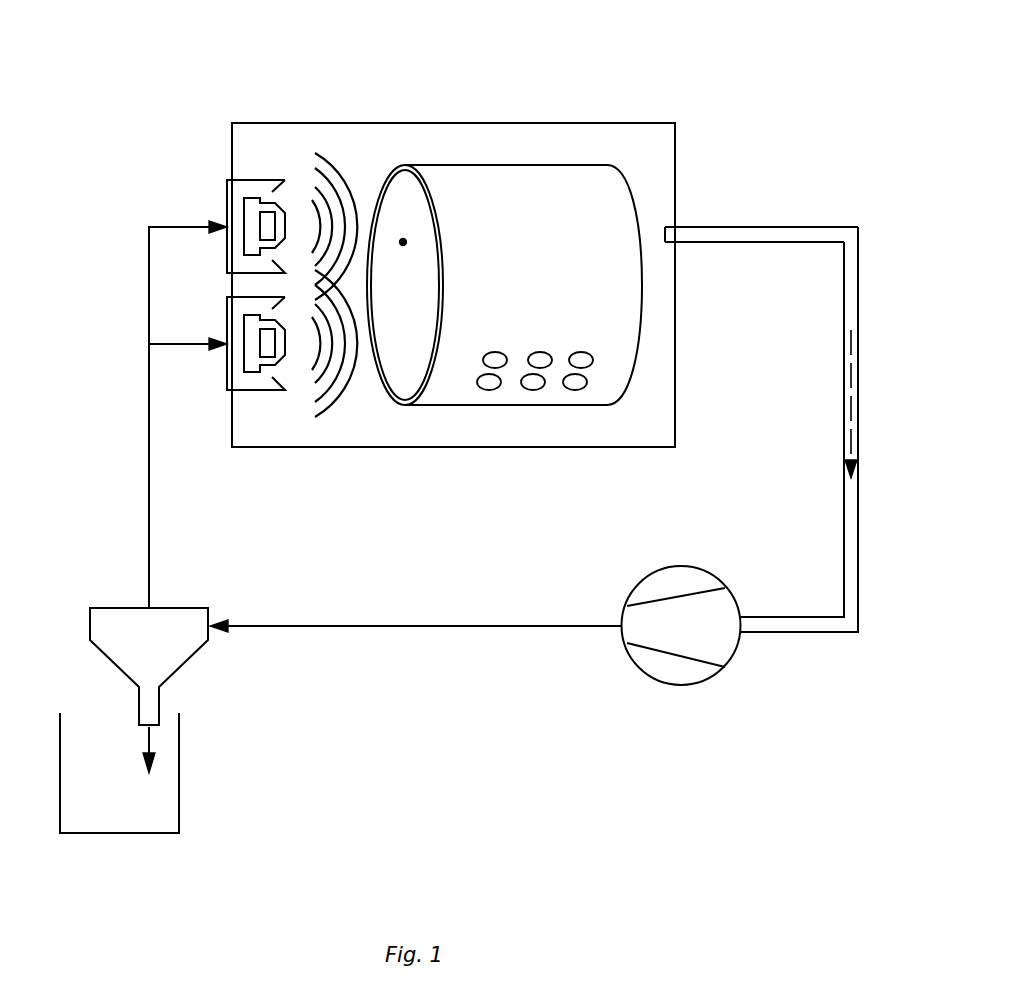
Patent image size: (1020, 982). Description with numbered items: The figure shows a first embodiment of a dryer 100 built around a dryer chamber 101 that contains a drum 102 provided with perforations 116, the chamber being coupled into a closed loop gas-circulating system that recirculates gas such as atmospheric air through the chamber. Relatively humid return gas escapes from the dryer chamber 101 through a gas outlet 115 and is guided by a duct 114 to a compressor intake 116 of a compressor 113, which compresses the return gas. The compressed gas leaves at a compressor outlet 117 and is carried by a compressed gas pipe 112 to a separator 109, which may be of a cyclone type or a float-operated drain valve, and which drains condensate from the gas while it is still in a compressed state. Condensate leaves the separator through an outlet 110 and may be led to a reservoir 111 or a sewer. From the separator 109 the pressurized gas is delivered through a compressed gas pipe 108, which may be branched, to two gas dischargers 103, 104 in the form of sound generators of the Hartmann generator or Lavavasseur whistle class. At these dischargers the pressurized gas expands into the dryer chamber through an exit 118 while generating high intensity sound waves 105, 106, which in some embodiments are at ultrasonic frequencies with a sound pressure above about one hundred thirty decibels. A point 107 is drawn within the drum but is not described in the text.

The dryer 100 is at (744, 60).
The dryer chamber 101 is at (460, 123).
The drum 102 is at (548, 295).
The gas discharger 103 is at (251, 178).
The gas discharger 104 is at (247, 391).
The high intensity sound waves 105 is at (340, 182).
The high intensity sound waves 106 is at (347, 392).
The drum rotation axis 107 is at (403, 242).
The compressed gas pipe 108 is at (151, 448).
The separator 109 is at (178, 607).
The outlet 110 is at (162, 698).
The reservoir 111 is at (180, 788).
The compressed gas pipe 112 is at (386, 625).
The compressor 113 is at (663, 565).
The duct 114 is at (861, 518).
The gas outlet 115 is at (673, 236).
The perforations / compressor intake 116 is at (521, 346).
The compressor outlet 117 is at (618, 627).
The exit 118 is at (291, 381).